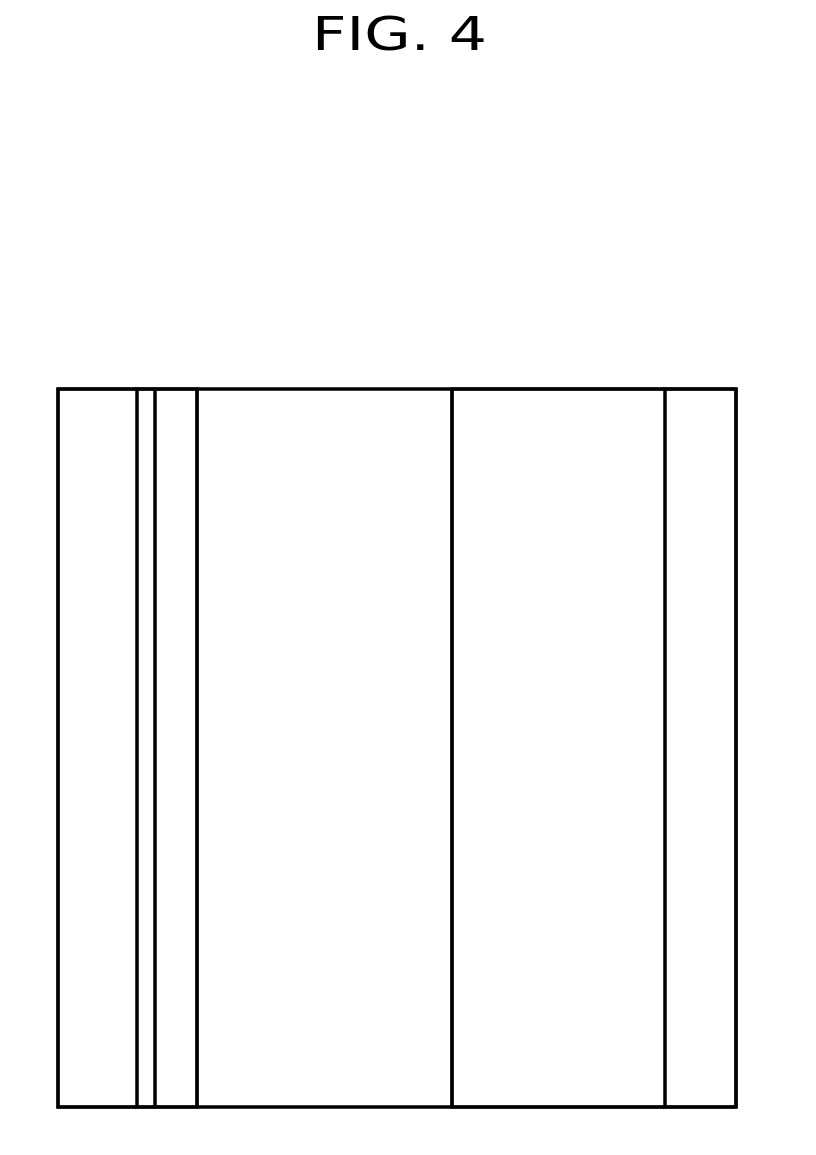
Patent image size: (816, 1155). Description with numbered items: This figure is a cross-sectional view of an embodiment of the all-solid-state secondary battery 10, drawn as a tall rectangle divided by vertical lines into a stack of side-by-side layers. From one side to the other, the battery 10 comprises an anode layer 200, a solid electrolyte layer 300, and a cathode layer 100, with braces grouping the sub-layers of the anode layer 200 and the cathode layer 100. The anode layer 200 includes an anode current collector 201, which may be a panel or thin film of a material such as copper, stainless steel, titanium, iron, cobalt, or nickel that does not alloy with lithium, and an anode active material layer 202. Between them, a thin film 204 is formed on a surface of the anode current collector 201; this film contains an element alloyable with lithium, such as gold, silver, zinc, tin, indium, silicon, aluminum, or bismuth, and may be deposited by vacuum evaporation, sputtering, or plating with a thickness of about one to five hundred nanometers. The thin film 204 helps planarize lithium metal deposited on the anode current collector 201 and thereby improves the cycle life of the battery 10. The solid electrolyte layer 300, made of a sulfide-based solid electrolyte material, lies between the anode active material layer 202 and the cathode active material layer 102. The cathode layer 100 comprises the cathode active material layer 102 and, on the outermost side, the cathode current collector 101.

The all-solid-state secondary battery 10 is at (468, 294).
The cathode layer 100 is at (568, 318).
The cathode current collector 101 is at (704, 402).
The cathode active material layer 102 is at (575, 402).
The anode layer 200 is at (203, 318).
The anode current collector 201 is at (87, 402).
The anode active material layer 202 is at (179, 402).
The thin film 204 is at (143, 402).
The solid electrolyte layer 300 is at (320, 400).